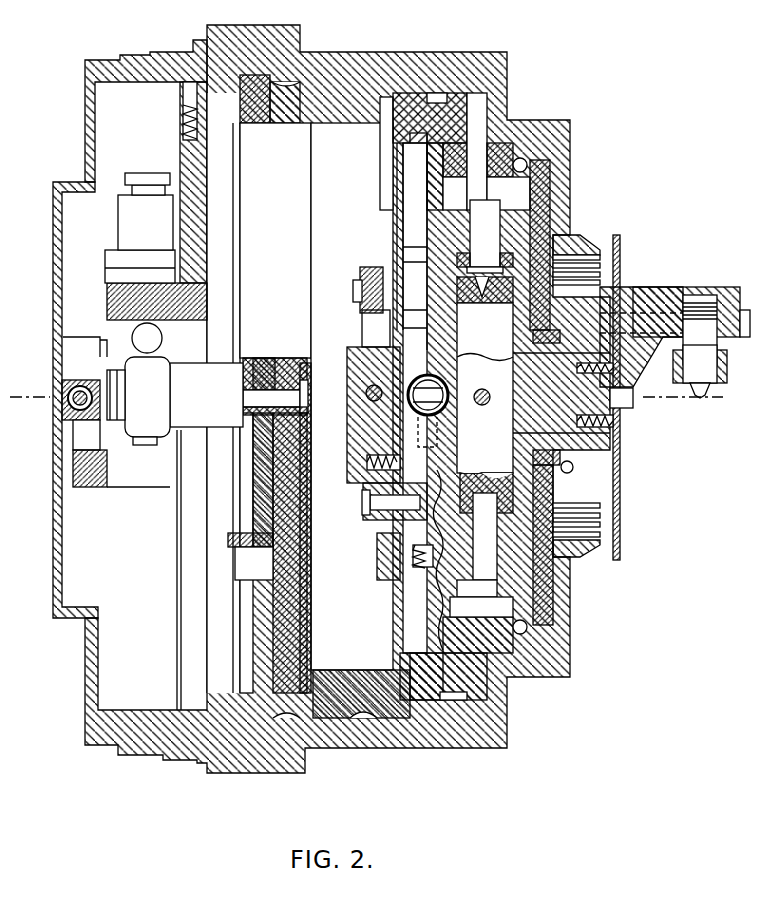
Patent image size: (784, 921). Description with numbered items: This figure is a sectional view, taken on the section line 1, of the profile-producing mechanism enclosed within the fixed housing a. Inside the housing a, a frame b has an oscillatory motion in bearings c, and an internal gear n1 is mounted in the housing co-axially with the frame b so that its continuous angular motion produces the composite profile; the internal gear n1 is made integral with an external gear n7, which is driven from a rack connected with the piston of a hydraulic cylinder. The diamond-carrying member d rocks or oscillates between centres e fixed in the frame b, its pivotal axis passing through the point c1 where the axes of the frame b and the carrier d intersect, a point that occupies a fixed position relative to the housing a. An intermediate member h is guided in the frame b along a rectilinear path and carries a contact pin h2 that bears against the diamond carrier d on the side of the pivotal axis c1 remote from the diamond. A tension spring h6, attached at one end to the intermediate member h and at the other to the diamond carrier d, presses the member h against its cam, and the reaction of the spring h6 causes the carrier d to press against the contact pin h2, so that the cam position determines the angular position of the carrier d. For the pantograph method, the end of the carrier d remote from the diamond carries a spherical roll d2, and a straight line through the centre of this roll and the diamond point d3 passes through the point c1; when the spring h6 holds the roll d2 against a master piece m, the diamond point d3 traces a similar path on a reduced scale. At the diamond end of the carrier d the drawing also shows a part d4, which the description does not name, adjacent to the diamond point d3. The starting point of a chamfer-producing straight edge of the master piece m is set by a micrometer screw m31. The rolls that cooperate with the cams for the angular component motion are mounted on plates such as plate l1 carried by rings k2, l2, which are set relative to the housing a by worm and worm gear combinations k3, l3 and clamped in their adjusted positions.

The fixed housing a is at (507, 72).
The frame b is at (549, 228).
The bearings c is at (567, 175).
The point of intersection of oscillation axes c1 is at (482, 405).
The diamond-carrying member d is at (175, 401).
The spherical roll d2 is at (147, 430).
The diamond point d3 is at (700, 398).
The screw housing d4 is at (647, 293).
The centres e is at (482, 290).
The intermediate member h is at (360, 438).
The contact pin h2 is at (365, 396).
The tension spring h6 is at (415, 378).
The ring k2 is at (340, 690).
The worm and worm gear combination k3 is at (367, 720).
The plate l1 is at (257, 440).
The ring l2 is at (288, 488).
The worm and worm gear combination l3 is at (287, 717).
The master pieces m is at (160, 340).
The micrometer screw m31 is at (160, 240).
The internal gear n1 is at (402, 135).
The external gear n7 is at (453, 93).
The section line 1 is at (373, 392).